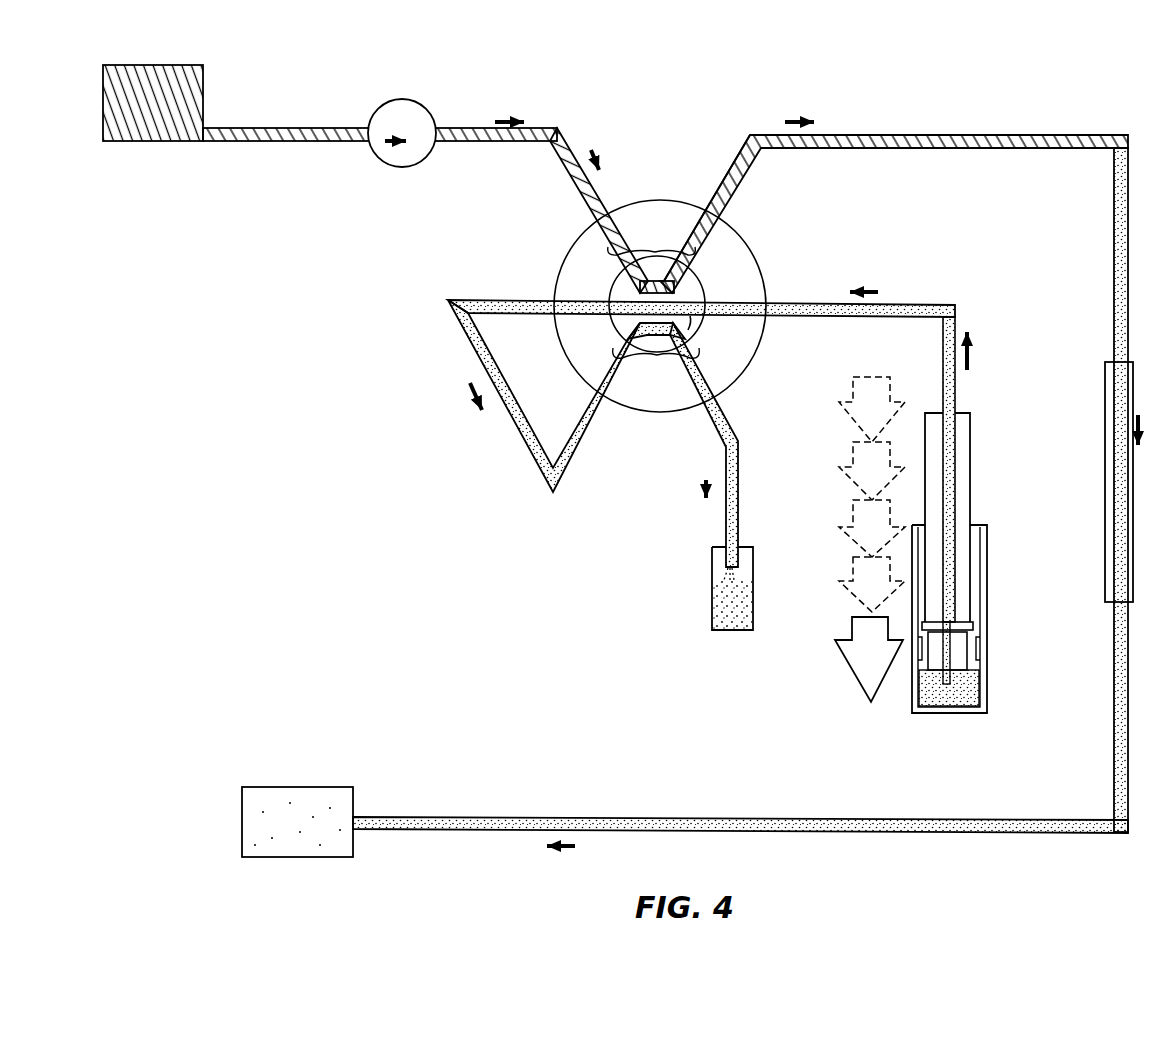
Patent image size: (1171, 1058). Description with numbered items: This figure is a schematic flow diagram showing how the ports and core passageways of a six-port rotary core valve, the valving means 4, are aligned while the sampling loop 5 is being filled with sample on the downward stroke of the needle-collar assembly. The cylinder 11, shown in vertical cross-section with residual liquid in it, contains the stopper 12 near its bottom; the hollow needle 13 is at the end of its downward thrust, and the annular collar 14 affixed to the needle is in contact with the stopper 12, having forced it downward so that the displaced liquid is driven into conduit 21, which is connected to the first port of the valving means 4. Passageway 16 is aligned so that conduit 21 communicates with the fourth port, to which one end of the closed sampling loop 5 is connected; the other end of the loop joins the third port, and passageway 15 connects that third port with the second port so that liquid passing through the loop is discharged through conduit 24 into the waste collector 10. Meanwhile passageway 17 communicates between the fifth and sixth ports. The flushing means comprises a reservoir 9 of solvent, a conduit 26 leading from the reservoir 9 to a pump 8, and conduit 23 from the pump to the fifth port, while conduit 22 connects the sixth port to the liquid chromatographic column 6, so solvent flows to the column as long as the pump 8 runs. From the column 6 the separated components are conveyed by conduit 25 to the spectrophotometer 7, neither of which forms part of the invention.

The valving means 4 is at (694, 268).
The sampling loop 5 is at (518, 430).
The liquid chromatographic column 6 is at (1104, 385).
The spectrophotometer 7 is at (302, 782).
The pump 8 is at (400, 99).
The reservoir 9 is at (166, 64).
The waste collector 10 is at (712, 603).
The cylinder 11 is at (989, 565).
The stopper 12 is at (958, 645).
The hollow needle 13 is at (945, 685).
The annular collar 14 is at (974, 458).
The passageway 15 is at (657, 360).
The passageway 16 is at (688, 303).
The passageway 17 is at (655, 250).
The conduit 21 is at (812, 303).
The conduit 22 is at (937, 135).
The conduit 23 is at (555, 128).
The conduit 24 is at (720, 430).
The conduit 25 is at (501, 817).
The conduit 26 is at (311, 128).